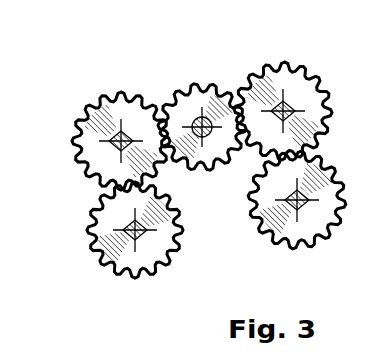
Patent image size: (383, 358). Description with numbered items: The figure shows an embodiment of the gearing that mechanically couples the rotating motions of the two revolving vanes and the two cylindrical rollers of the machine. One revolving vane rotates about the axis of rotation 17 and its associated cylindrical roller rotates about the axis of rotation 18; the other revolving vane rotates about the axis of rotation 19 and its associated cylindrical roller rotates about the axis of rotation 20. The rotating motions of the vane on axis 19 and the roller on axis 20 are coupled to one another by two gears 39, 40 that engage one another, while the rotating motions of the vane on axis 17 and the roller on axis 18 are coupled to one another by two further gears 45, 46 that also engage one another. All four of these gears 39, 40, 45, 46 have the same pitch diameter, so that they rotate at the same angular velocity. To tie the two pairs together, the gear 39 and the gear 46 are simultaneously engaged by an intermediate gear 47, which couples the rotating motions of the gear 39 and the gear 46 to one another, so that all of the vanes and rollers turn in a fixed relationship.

The axis of rotation 17 is at (130, 245).
The axis of rotation 18 is at (126, 131).
The axis of rotation 19 is at (283, 100).
The axis of rotation 20 is at (303, 210).
The gear 39 is at (318, 86).
The gear 40 is at (297, 247).
The gear 45 is at (149, 276).
The gear 46 is at (93, 106).
The gear 47 is at (204, 80).